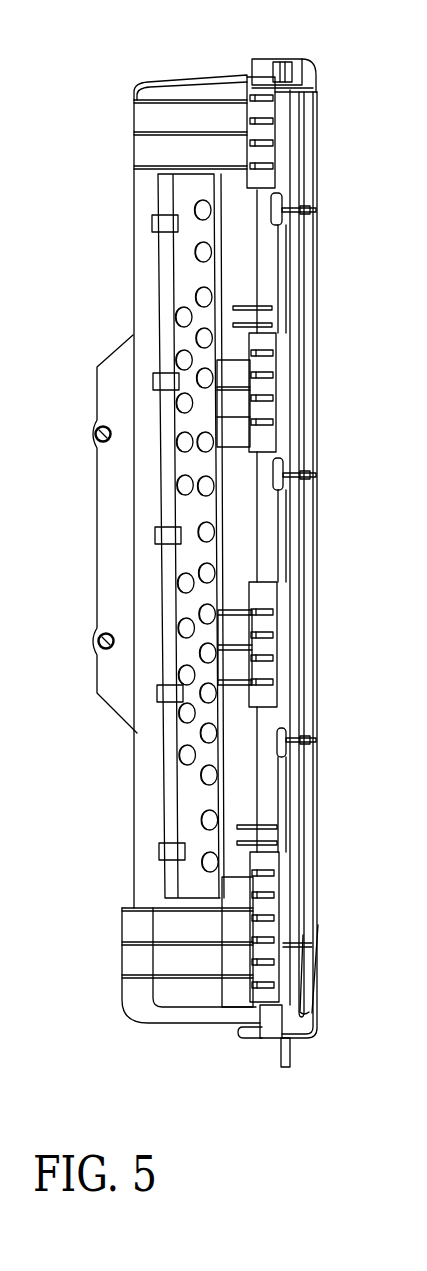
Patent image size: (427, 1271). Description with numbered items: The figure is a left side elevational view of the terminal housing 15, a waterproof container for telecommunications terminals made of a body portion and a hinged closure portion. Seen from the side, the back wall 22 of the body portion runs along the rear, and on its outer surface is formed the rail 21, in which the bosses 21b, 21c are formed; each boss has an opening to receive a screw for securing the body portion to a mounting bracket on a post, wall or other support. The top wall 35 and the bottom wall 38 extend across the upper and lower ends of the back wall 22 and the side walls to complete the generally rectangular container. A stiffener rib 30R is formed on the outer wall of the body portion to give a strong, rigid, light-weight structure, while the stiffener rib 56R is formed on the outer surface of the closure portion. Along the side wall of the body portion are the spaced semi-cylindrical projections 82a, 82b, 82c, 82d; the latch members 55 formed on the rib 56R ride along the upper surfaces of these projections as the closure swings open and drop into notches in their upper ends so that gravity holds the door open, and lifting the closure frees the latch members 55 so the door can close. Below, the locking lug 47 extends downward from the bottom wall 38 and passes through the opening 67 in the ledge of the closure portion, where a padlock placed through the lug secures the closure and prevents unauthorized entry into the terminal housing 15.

The terminal housing 15 is at (138, 91).
The rail 21 is at (108, 510).
The boss 21b is at (99, 429).
The boss 21c is at (102, 636).
The back wall 22 is at (133, 288).
The stiffener rib 30R is at (170, 137).
The top wall 35 is at (215, 78).
The bottom wall 38 is at (197, 1008).
The locking lug 47 is at (290, 1052).
The latch member 55 is at (290, 195).
The stiffener rib 56R is at (314, 211).
The opening 67 is at (243, 1035).
The semi-cylindrical projection 82a is at (264, 136).
The semi-cylindrical projection 82b is at (266, 388).
The semi-cylindrical projection 82c is at (271, 648).
The semi-cylindrical projection 82d is at (267, 908).